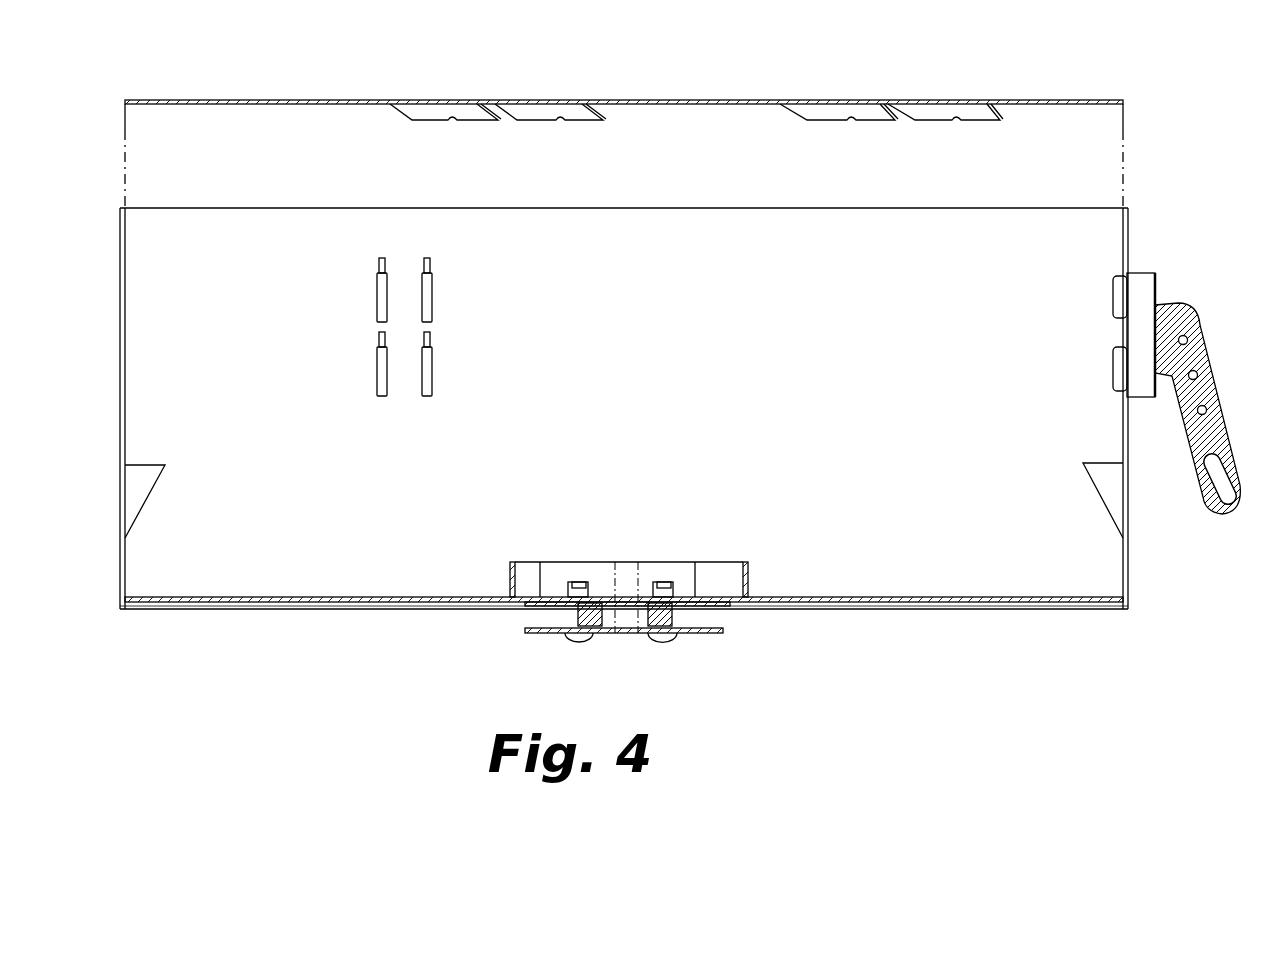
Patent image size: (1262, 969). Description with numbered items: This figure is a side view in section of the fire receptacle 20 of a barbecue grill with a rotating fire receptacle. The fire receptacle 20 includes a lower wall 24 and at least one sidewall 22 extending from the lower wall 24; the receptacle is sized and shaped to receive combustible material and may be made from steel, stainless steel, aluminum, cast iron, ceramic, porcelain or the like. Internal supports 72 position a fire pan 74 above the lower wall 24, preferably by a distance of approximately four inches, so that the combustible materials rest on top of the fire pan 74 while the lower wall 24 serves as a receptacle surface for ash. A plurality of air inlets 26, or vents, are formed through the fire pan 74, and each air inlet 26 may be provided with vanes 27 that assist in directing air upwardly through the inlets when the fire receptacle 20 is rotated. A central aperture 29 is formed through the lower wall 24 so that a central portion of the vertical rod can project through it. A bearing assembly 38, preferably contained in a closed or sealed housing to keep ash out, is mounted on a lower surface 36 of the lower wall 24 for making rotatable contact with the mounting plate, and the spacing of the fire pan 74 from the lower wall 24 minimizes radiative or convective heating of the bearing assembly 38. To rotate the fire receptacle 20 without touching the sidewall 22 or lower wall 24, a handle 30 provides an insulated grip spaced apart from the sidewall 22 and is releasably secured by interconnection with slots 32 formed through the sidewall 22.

The fire receptacle 20 is at (1154, 208).
The sidewall 22 is at (120, 321).
The lower wall 24 is at (926, 602).
The air inlets 26 is at (472, 74).
The vanes 27 is at (585, 122).
The central aperture 29 is at (611, 664).
The handle 30 is at (1210, 350).
The slots 32 is at (350, 320).
The lower surface 36 is at (318, 602).
The bearing assembly 38 is at (700, 634).
The internal supports 72 is at (163, 484).
The fire pan 74 is at (655, 100).